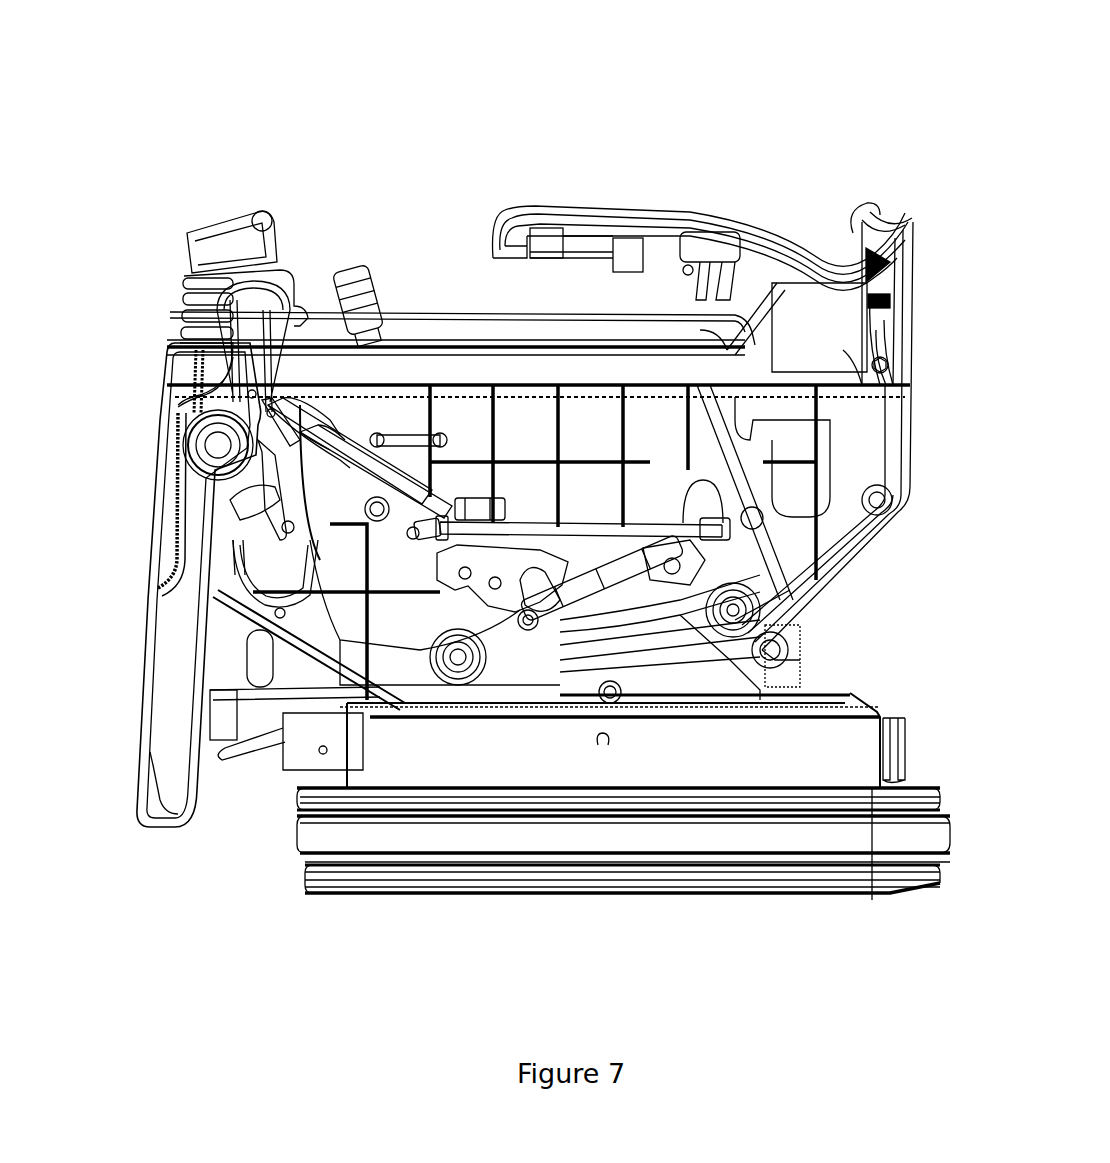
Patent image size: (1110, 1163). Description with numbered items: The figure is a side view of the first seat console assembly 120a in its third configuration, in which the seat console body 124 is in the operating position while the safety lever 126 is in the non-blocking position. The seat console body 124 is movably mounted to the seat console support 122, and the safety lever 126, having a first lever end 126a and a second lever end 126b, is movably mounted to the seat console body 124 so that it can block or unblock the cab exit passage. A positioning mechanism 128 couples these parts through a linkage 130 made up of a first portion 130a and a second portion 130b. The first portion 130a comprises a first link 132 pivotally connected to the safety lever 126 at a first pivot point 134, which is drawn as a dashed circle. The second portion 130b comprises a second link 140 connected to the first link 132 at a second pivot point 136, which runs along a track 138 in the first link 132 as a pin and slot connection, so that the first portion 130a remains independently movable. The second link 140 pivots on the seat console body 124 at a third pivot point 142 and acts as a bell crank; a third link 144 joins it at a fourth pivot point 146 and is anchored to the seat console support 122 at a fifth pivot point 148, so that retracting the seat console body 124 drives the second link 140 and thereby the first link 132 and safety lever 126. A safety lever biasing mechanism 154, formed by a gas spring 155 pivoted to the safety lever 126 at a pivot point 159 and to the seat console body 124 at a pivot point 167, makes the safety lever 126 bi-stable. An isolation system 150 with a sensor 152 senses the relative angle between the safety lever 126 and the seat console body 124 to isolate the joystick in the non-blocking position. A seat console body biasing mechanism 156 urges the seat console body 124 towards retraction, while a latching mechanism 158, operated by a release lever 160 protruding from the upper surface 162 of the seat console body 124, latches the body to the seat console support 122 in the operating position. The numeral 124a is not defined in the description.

The first seat console assembly 120a is at (792, 182).
The seat console support 122 is at (678, 627).
The seat console body 124 is at (584, 833).
The seat pan frame 124a is at (397, 668).
The safety lever 126 is at (163, 693).
The first lever end 126a is at (153, 765).
The second lever end 126b is at (243, 245).
The positioning mechanism 128 is at (538, 388).
The linkage 130 is at (518, 517).
The first portion 130a is at (170, 490).
The second portion 130b is at (497, 523).
The first link 132 is at (270, 452).
The first pivot point 134 is at (252, 390).
The second pivot point 136 is at (288, 527).
The track 138 is at (275, 487).
The second link 140 is at (333, 523).
The third pivot point 142 is at (588, 353).
The third link 144 is at (664, 754).
The fourth pivot point 146 is at (525, 754).
The fifth pivot point 148 is at (740, 533).
The isolation system 150 is at (175, 303).
The sensor 152 is at (197, 422).
The safety lever biasing mechanism 154 is at (376, 361).
The gas spring 155 is at (360, 465).
The seat console body biasing mechanism 156 is at (618, 590).
The latching mechanism 158 is at (498, 595).
The pivot point 159 is at (271, 410).
The release lever 160 is at (366, 280).
The upper surface 162 is at (377, 508).
The pivot point 167 is at (443, 517).